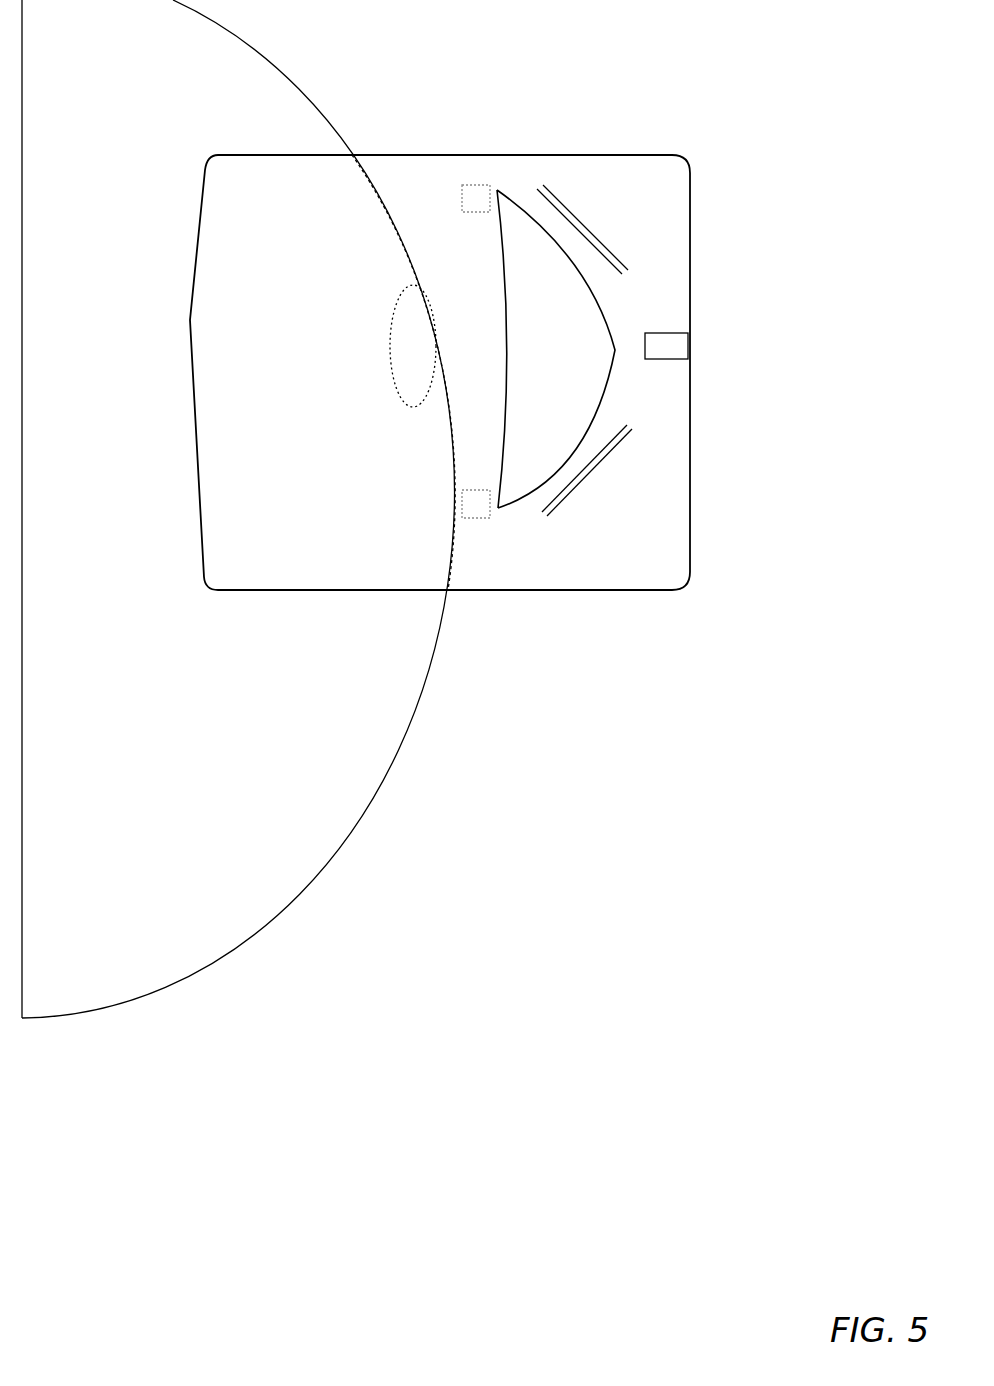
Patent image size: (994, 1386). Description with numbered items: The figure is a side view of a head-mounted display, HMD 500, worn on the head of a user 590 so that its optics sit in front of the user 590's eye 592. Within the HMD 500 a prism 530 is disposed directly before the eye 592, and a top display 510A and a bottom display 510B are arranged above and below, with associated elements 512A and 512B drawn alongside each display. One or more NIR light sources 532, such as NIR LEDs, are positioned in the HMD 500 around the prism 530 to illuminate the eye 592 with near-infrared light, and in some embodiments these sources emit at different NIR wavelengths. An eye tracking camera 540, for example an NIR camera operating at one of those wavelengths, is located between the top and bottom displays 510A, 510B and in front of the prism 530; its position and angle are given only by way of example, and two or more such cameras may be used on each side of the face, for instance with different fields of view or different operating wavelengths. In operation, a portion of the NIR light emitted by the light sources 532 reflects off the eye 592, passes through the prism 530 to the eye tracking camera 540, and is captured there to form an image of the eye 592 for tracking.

The user 590 is at (238, 509).
The eye 592 is at (415, 307).
The HMD 500 is at (440, 372).
The NIR light source 532 is at (476, 200).
The prism 530 is at (556, 349).
The top display 510A is at (567, 211).
The first lens 512A is at (597, 227).
The bottom display 510B is at (567, 490).
The second lens 512B is at (599, 478).
The eye tracking camera 540 is at (666, 346).